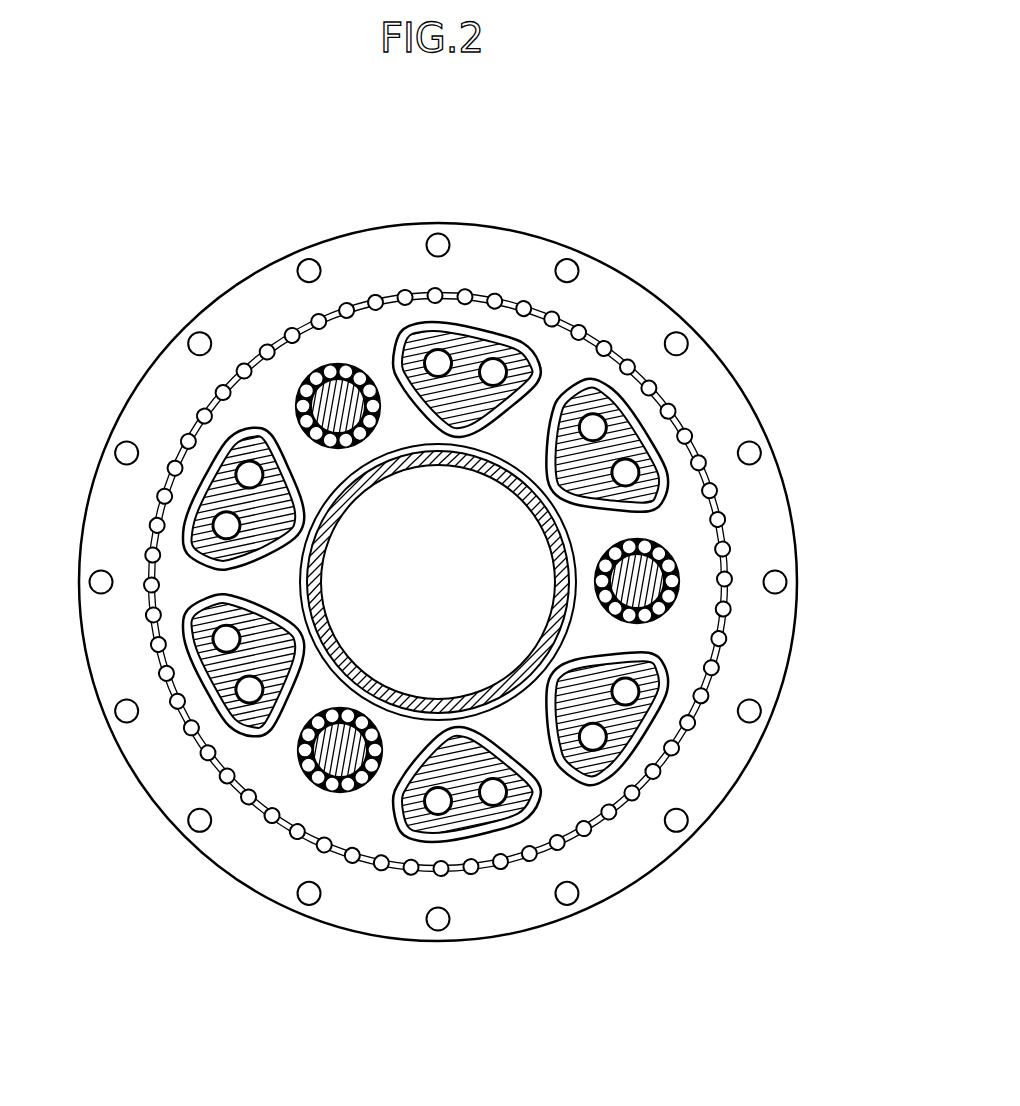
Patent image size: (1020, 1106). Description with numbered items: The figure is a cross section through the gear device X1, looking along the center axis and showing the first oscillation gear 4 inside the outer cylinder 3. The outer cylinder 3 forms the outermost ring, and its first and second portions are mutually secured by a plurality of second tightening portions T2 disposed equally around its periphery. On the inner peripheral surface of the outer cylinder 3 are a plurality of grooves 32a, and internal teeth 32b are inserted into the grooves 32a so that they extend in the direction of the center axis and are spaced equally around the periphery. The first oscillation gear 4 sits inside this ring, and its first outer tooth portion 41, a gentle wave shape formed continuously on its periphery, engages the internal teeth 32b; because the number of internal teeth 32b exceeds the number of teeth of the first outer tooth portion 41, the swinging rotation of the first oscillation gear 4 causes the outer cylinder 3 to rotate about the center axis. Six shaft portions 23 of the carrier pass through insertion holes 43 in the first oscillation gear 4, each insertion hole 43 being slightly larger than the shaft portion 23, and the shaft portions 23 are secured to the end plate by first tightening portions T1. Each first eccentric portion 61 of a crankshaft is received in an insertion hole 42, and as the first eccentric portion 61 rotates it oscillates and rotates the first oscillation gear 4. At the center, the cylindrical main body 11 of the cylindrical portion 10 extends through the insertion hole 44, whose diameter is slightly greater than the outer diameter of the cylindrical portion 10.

The gear device X1 is at (666, 203).
The outer cylinder 3 is at (358, 250).
The second tightening portions T2 is at (558, 264).
The first oscillation gear 4 is at (499, 616).
The first outer tooth portion 41 is at (518, 865).
The grooves 32a is at (365, 863).
The internal teeth 32b is at (608, 817).
The insertion holes 43 is at (450, 437).
The shaft portions 23 is at (402, 400).
The first tightening portions T1 is at (600, 420).
The insertion holes 42 is at (678, 565).
The first eccentric portion 61 is at (680, 583).
The cylindrical portion 10 is at (438, 582).
The cylindrical main body 11 is at (336, 626).
The insertion hole 44 is at (320, 652).